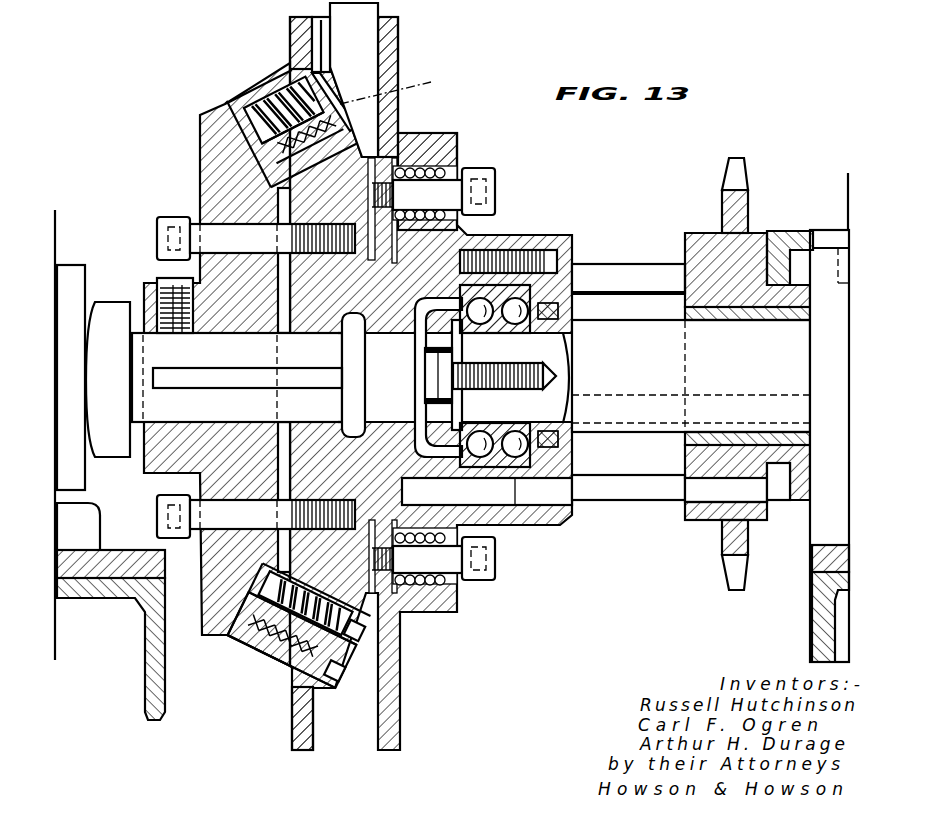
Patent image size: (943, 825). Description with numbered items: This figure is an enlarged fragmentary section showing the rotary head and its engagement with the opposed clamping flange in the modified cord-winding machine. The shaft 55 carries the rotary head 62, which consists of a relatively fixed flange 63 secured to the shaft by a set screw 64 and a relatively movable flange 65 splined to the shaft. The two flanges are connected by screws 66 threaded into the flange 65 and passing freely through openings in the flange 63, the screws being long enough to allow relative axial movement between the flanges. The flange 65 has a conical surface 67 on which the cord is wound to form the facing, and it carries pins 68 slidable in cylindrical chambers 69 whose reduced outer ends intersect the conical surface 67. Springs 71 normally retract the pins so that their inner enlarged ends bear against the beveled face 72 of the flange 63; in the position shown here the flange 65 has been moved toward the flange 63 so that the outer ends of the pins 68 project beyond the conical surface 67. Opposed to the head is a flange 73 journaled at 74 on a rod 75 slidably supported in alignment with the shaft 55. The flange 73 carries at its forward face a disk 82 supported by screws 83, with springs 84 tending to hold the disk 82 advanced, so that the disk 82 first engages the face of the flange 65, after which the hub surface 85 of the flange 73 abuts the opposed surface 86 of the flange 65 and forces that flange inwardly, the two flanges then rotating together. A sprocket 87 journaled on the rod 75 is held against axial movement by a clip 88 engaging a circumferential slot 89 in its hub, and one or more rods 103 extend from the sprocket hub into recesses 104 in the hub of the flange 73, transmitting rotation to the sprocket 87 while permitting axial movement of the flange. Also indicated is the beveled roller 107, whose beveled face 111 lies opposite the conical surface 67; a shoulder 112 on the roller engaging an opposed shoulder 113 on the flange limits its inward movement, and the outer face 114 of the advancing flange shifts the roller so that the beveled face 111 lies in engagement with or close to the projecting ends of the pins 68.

The shaft 55 is at (240, 362).
The rotary head 62 is at (283, 366).
The relatively fixed flange 63 is at (217, 364).
The set screw 64 is at (152, 290).
The relatively movable flange 65 is at (278, 39).
The screws 66 is at (248, 247).
The conical surface 67 is at (329, 718).
The pins 68 is at (384, 371).
The cylindrical chambers 69 is at (275, 373).
The springs 71 is at (292, 374).
The beveled face 72 is at (199, 89).
The flange 73 is at (431, 383).
The journal 74 is at (518, 376).
The rod 75 is at (655, 381).
The disk 82 is at (449, 170).
The screws 83 is at (440, 203).
The springs 84 is at (481, 380).
The hub surface 85 is at (325, 345).
The opposed surface 86 is at (325, 408).
The sprocket 87 is at (712, 369).
The clip 88 is at (791, 229).
The circumferential slot 89 is at (781, 506).
The rods 103 is at (669, 391).
The recesses 104 is at (470, 503).
The beveled roller 107 is at (363, 8).
The beveled face 111 is at (402, 88).
The shoulder 112 is at (344, 46).
The opposed shoulder 113 is at (340, 44).
The outer face 114 is at (414, 305).